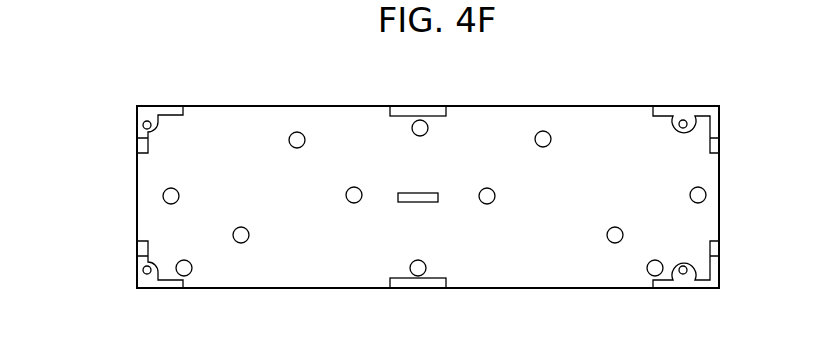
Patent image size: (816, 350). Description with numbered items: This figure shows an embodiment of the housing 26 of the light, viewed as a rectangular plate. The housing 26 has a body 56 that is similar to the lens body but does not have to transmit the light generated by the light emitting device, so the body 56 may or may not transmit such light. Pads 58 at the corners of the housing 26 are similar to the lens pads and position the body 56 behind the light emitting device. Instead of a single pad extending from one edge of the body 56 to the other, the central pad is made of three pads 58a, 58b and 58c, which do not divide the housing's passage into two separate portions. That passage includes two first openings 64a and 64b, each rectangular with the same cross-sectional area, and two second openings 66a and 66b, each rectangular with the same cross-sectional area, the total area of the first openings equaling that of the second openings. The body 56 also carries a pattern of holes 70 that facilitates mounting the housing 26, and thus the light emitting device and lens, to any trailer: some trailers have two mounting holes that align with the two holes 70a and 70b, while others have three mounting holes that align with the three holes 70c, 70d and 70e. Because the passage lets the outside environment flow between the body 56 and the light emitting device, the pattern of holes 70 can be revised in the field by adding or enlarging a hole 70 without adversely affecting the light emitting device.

The housing 26 is at (103, 100).
The body 56 is at (277, 211).
The pads 58 is at (170, 110).
The pad 58a is at (418, 197).
The pad 58b is at (417, 110).
The pad 58c is at (415, 283).
The first opening 64a is at (297, 106).
The first opening 64b is at (547, 106).
The second opening 66a is at (297, 288).
The second opening 66b is at (541, 288).
The holes 70 is at (289, 140).
The hole 70a is at (176, 188).
The hole 70b is at (692, 187).
The hole 70c is at (414, 133).
The hole 70d is at (191, 268).
The hole 70e is at (647, 268).